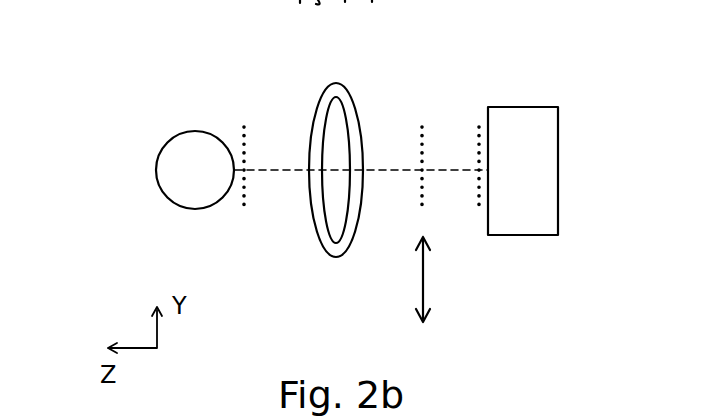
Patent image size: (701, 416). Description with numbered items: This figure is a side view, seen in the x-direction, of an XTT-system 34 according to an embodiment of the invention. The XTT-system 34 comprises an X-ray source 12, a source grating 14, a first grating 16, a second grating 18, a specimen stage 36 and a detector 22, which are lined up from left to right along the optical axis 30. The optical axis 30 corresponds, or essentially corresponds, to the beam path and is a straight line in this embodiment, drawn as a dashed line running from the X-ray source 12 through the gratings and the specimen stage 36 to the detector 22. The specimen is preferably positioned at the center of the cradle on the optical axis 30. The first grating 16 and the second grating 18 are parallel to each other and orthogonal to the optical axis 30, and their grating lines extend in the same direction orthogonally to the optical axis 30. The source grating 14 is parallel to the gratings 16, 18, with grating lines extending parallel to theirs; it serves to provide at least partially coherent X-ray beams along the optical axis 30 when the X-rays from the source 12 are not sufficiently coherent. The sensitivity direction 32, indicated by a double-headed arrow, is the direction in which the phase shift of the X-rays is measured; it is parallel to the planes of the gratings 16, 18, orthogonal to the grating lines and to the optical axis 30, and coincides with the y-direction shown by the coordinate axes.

The X-ray source 12 is at (180, 133).
The source grating 14 is at (250, 133).
The first grating 16 is at (424, 132).
The second grating 18 is at (482, 133).
The detector 22 is at (558, 125).
The optical axis 30 is at (278, 172).
The sensitivity direction 32 is at (427, 277).
The XTT-system 34 is at (141, 41).
The specimen stage 36 is at (376, 80).